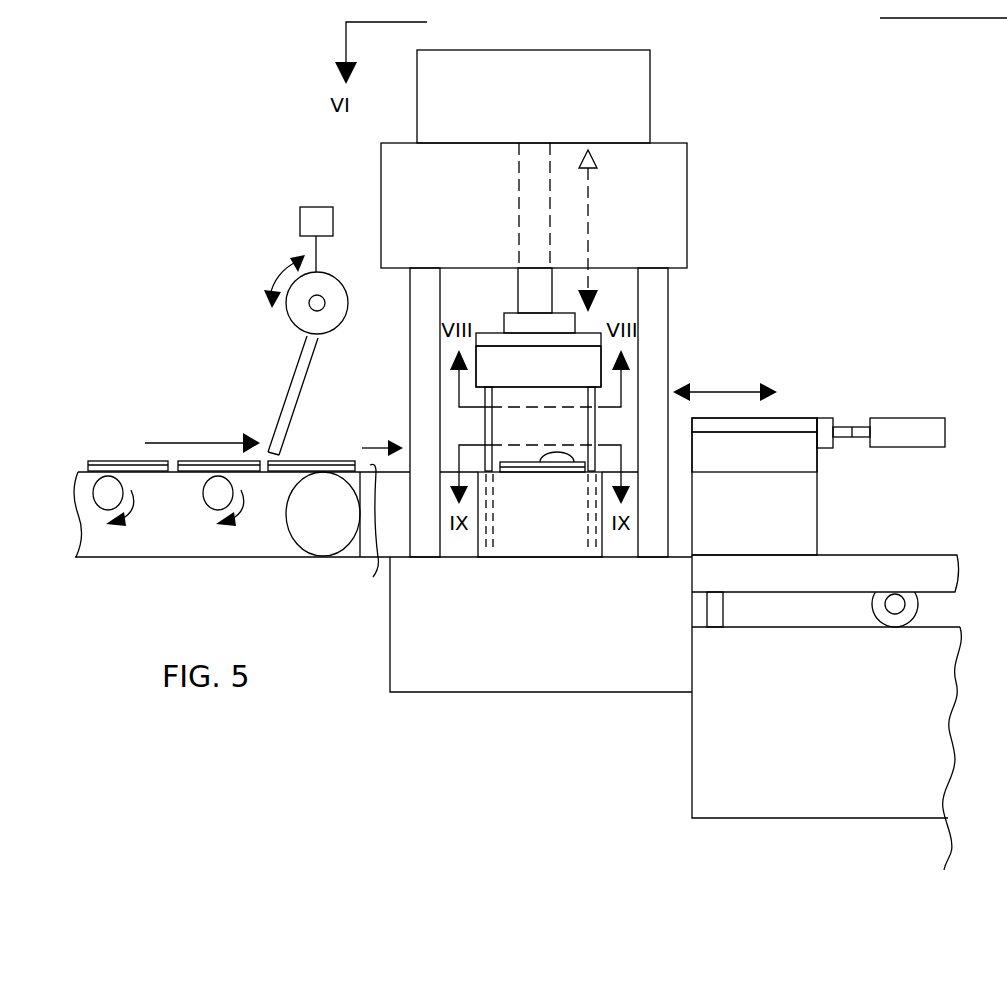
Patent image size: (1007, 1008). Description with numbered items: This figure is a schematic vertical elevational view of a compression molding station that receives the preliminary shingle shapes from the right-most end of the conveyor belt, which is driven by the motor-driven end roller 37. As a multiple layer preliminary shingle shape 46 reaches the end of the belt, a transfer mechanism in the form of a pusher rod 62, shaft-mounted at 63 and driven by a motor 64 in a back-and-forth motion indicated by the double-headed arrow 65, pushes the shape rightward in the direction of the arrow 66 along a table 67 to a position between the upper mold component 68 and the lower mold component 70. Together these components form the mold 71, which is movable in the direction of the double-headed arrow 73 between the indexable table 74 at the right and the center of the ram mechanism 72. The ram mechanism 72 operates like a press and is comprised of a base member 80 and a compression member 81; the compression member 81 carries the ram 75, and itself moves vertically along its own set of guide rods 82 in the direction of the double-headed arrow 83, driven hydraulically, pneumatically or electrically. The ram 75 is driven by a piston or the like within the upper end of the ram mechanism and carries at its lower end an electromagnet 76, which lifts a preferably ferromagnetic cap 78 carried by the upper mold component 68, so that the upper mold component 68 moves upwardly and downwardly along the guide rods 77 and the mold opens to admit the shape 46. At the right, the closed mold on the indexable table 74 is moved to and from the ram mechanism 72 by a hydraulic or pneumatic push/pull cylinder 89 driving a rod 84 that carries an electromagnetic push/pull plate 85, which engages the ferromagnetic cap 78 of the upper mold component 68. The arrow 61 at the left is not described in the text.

The motor-driven end roller 37 is at (331, 540).
The multiple layer preliminary shingle shape 46 is at (565, 455).
The conveying direction arrow 61 is at (227, 441).
The pusher rod 62 is at (300, 372).
The shaft mount 63 is at (303, 315).
The motor 64 is at (318, 205).
The double-headed arrow 65 is at (284, 270).
The arrow 66 is at (375, 446).
The table 67 is at (378, 562).
The upper mold component 68 is at (590, 361).
The lower mold component 70 is at (582, 547).
The mold 71 is at (614, 378).
The ram mechanism 72 is at (698, 198).
The double-headed arrow 73 is at (714, 392).
The indexable table 74 is at (889, 543).
The ram 75 is at (518, 292).
The electromagnet 76 is at (571, 323).
The guide rods 77 is at (595, 423).
The ferromagnetic cap 78 is at (600, 336).
The base member 80 is at (462, 675).
The compression member 81 is at (673, 170).
The guide rods 82 is at (410, 298).
The double-headed arrow 83 is at (590, 236).
The rod 84 is at (836, 422).
The electromagnetic push/pull plate 85 is at (860, 422).
The push/pull cylinder 89 is at (923, 418).